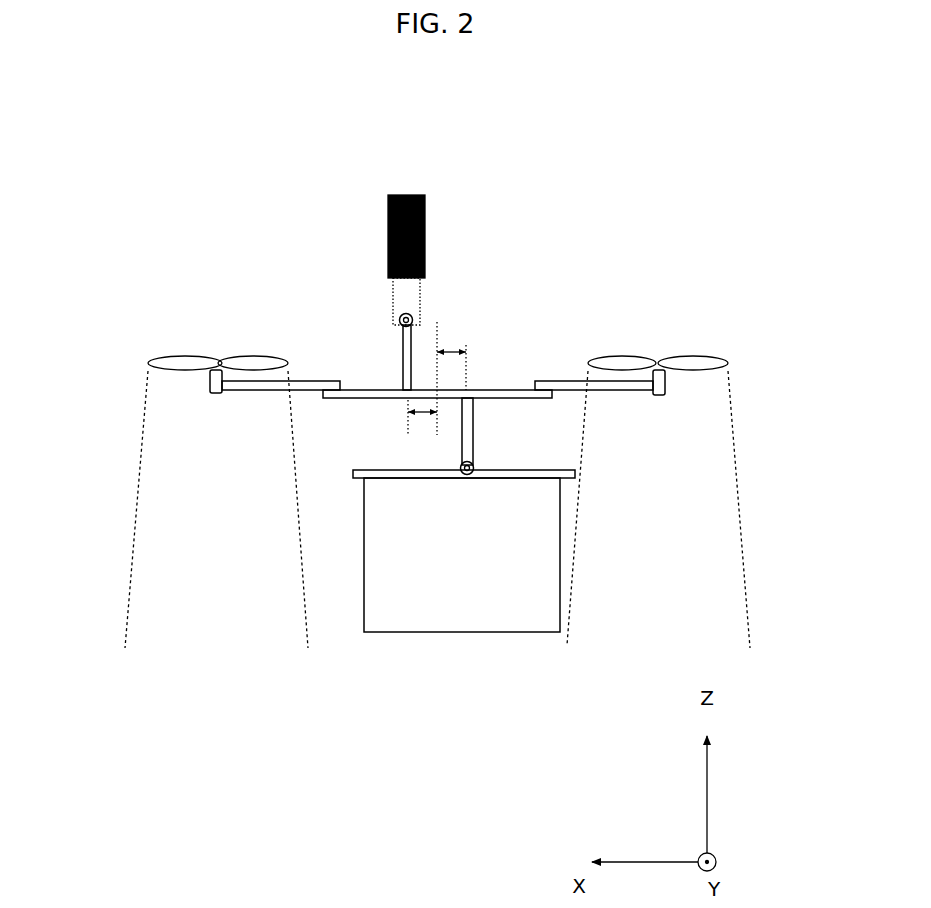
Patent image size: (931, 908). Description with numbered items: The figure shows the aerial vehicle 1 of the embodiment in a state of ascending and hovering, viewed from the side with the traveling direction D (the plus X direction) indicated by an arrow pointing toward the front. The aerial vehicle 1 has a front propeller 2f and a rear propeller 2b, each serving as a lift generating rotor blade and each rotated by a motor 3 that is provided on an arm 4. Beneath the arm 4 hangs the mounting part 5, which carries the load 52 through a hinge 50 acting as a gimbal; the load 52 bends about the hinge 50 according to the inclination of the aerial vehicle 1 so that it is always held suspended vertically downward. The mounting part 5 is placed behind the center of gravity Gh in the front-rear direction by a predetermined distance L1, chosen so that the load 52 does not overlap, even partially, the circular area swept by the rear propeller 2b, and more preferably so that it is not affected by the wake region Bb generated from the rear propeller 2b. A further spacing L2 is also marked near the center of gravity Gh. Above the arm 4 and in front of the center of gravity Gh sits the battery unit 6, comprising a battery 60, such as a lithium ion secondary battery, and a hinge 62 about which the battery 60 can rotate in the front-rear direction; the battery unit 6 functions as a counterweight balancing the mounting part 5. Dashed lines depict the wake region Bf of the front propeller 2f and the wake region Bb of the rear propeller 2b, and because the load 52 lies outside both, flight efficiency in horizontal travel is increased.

The aerial vehicle 1 is at (638, 247).
The front propeller 2f is at (172, 365).
The rear propeller 2b is at (608, 368).
The motor 3 is at (218, 395).
The arm 4 is at (507, 389).
The mounting part 5 is at (477, 425).
The battery unit 6 is at (430, 206).
The hinge 50 is at (475, 462).
The load 52 is at (466, 612).
The battery 60 is at (388, 257).
The hinge 62 is at (400, 325).
The traveling direction D is at (482, 103).
The center of gravity Gh is at (433, 328).
The predetermined distance L1 is at (450, 344).
The distance L2 is at (426, 418).
The wake region Bf is at (145, 525).
The wake region Bb is at (715, 530).